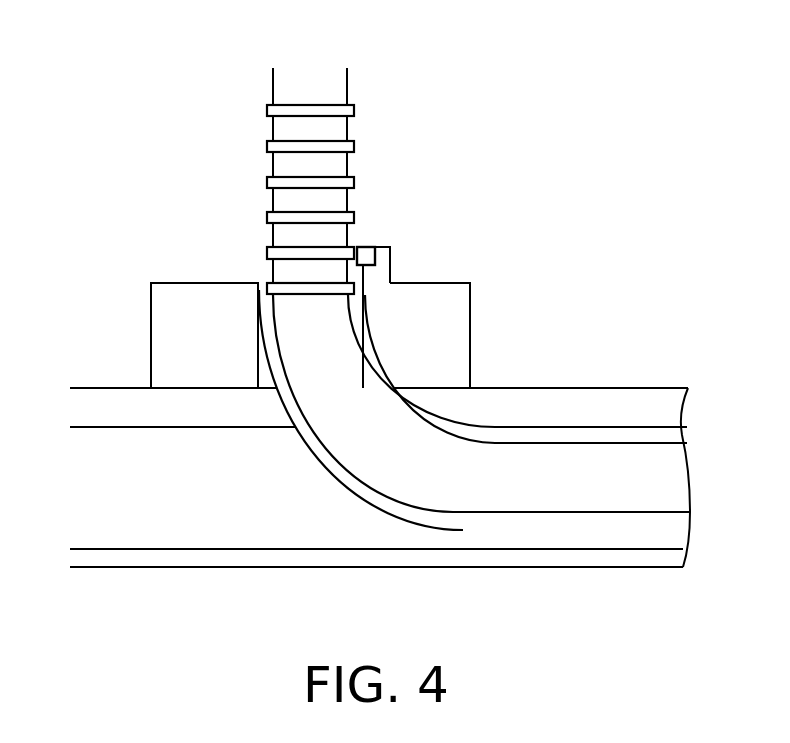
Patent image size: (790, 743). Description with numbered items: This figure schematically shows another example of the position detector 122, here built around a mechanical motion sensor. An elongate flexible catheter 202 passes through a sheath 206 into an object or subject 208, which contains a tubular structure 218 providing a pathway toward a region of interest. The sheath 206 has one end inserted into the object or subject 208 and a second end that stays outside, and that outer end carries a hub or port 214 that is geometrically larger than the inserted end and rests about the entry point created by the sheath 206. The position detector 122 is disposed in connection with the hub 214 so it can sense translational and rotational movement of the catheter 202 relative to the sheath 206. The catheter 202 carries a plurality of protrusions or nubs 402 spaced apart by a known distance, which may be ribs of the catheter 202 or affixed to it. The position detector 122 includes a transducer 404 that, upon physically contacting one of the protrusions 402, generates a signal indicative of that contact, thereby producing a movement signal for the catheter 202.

The elongate flexible catheter 202 is at (273, 85).
The protrusions or nubs 402 is at (360, 92).
The transducer 404 is at (363, 247).
The position detector 122 is at (390, 255).
The hub or port 214 is at (151, 320).
The sheath 206 is at (347, 483).
The object or subject 208 is at (230, 567).
The tubular structure 218 is at (147, 548).